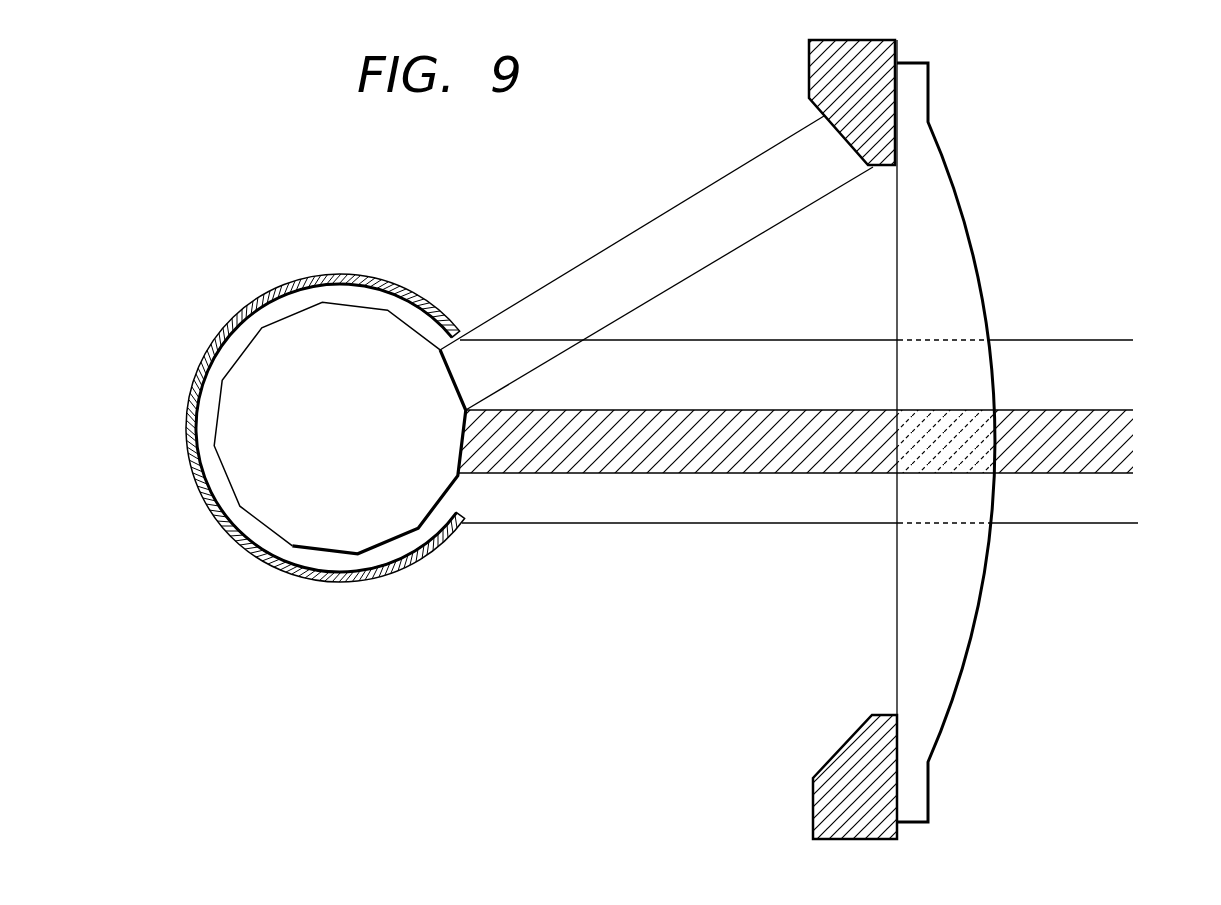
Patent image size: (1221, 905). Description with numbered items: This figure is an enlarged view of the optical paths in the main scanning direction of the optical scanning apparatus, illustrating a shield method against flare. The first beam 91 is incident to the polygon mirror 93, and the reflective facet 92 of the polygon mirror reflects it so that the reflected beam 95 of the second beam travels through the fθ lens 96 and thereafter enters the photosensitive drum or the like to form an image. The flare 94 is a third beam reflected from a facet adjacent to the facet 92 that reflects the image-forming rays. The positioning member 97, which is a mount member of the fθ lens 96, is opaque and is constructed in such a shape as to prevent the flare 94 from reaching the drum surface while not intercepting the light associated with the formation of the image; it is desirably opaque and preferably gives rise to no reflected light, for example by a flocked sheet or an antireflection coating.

The first beam 91 is at (1100, 348).
The reflective facet of the polygon mirror 92 is at (465, 455).
The polygon mirror 93 is at (361, 316).
The flare 94 is at (608, 265).
The reflected beam of the second beam 95 is at (1133, 440).
The fθ lens 96 is at (967, 262).
The positioning member 97 is at (809, 68).